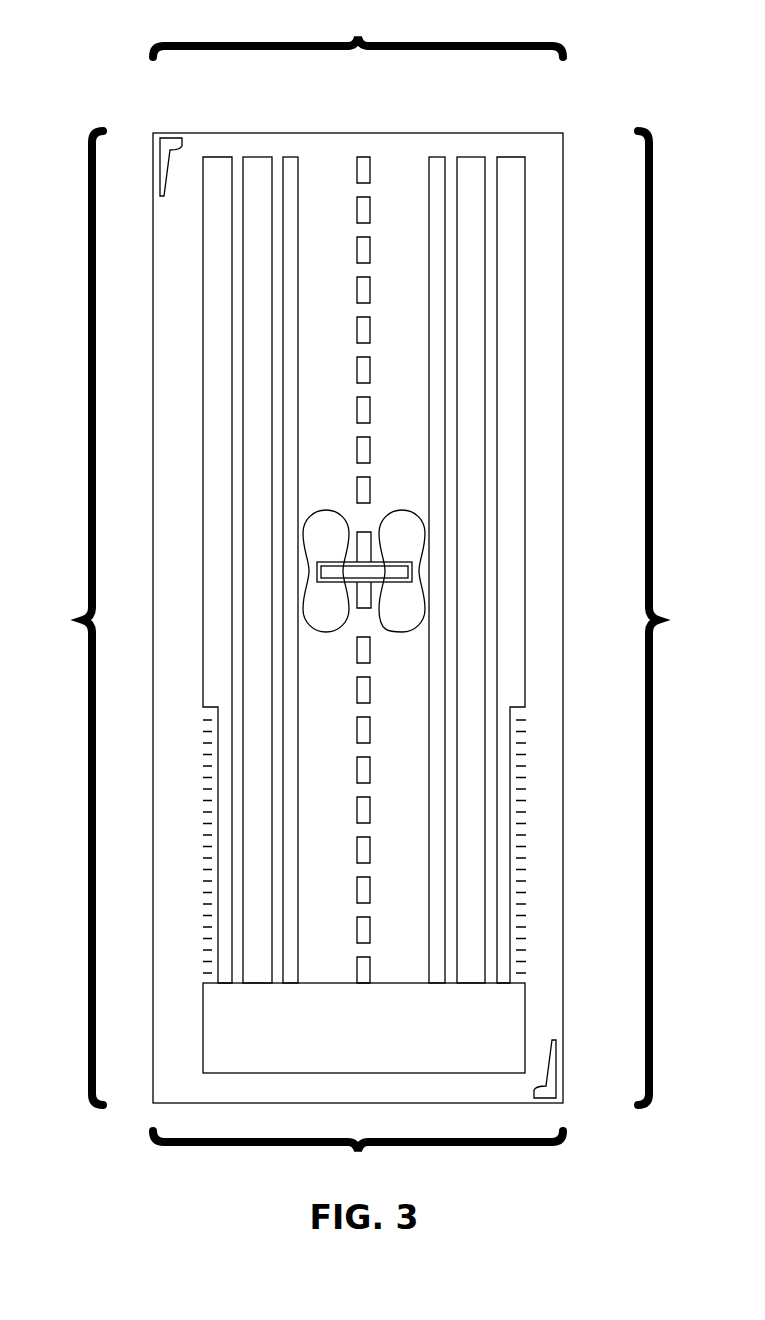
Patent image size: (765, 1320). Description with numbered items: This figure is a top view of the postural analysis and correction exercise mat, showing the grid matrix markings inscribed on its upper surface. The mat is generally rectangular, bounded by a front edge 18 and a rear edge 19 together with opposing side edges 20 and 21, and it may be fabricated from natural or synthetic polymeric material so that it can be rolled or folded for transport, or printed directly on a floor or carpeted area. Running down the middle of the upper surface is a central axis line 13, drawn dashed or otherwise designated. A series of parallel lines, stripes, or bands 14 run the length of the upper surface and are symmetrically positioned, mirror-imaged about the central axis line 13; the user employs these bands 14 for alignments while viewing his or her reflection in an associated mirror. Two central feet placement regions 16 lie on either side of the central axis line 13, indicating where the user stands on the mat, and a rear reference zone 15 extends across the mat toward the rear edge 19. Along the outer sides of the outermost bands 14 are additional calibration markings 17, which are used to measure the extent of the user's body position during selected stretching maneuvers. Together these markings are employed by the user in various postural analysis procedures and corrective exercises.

The central axis line 13 is at (366, 157).
The lines, stripes, or bands 14 is at (217, 156).
The rear reference zone 15 is at (277, 1062).
The feet placement regions 16 is at (330, 535).
The calibration markings 17 is at (535, 707).
The front edge 18 is at (358, 29).
The rear edge 19 is at (358, 1158).
The side edge 20 is at (666, 618).
The side edge 21 is at (74, 618).